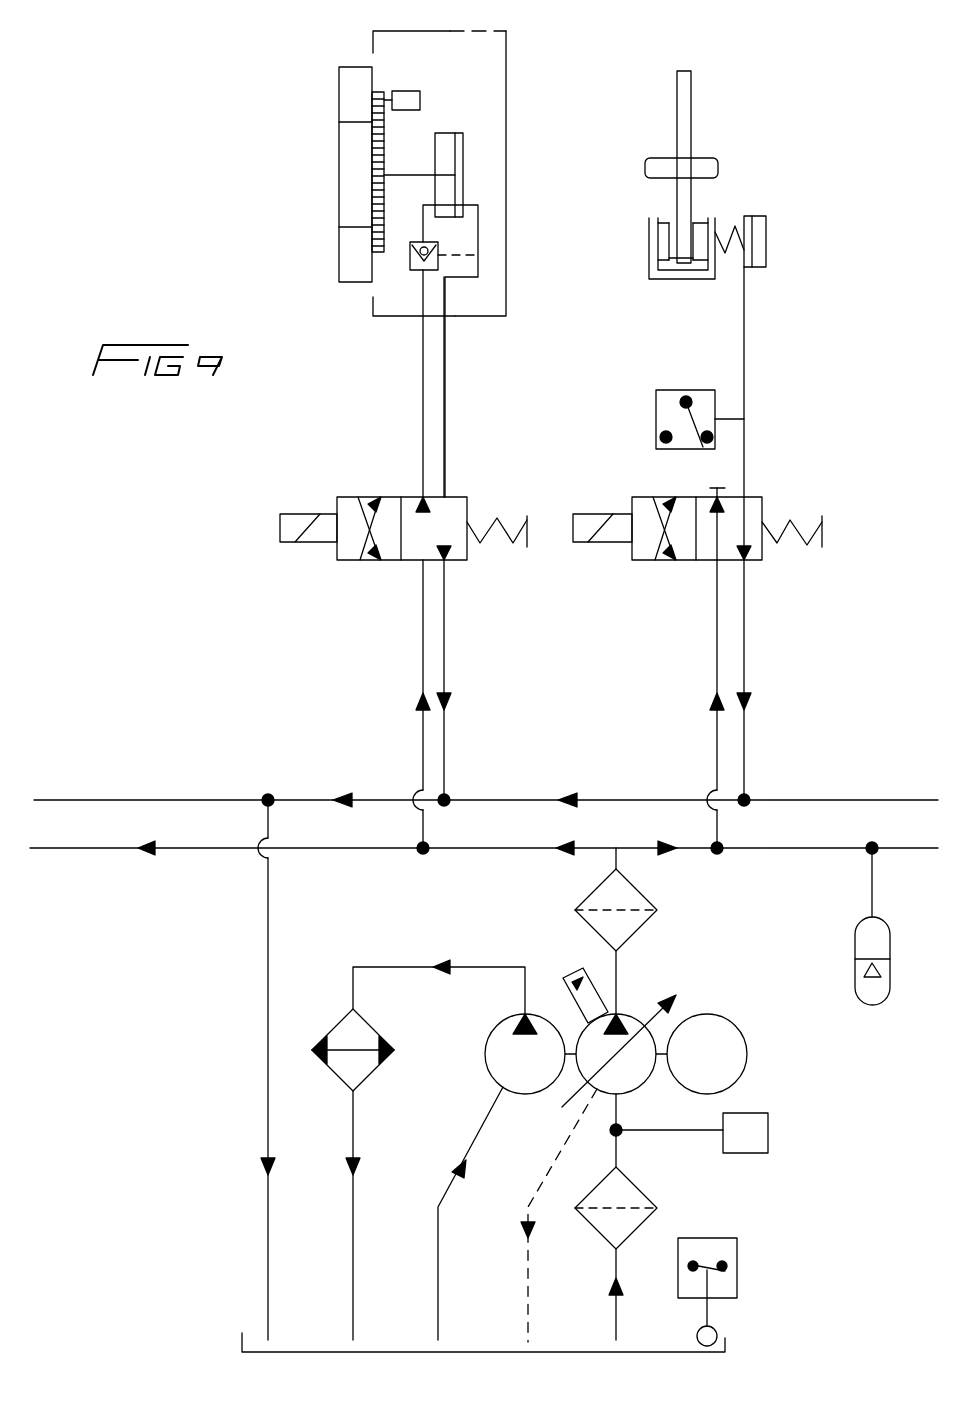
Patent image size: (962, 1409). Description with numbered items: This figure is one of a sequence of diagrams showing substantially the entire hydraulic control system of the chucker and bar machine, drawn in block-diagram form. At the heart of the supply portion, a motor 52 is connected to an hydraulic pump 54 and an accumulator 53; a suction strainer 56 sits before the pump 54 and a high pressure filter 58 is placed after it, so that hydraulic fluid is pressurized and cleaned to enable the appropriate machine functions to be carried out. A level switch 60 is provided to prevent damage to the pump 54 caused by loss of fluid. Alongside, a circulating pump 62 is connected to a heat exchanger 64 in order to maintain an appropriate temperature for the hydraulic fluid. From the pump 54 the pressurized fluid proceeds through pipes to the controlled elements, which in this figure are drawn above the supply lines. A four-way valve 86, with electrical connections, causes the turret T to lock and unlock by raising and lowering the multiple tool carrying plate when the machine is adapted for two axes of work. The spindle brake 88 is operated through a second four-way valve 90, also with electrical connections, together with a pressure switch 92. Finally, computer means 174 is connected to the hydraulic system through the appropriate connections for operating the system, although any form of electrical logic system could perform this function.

The transmission T is at (523, 57).
The spindle brake 88 is at (706, 90).
The pressure switch 92 is at (698, 393).
The four-way valve 90 is at (768, 498).
The four-way valve 86 is at (375, 570).
The high pressure filter 58 is at (636, 893).
The hydraulic pump 54 is at (628, 1013).
The circulating pump 62 is at (486, 1057).
The motor 52 is at (748, 1054).
The heat exchanger 64 is at (367, 1030).
The accumulator 53 is at (885, 932).
The computer means 174 is at (768, 1131).
The suction strainer 56 is at (640, 1195).
The level switch 60 is at (722, 1240).